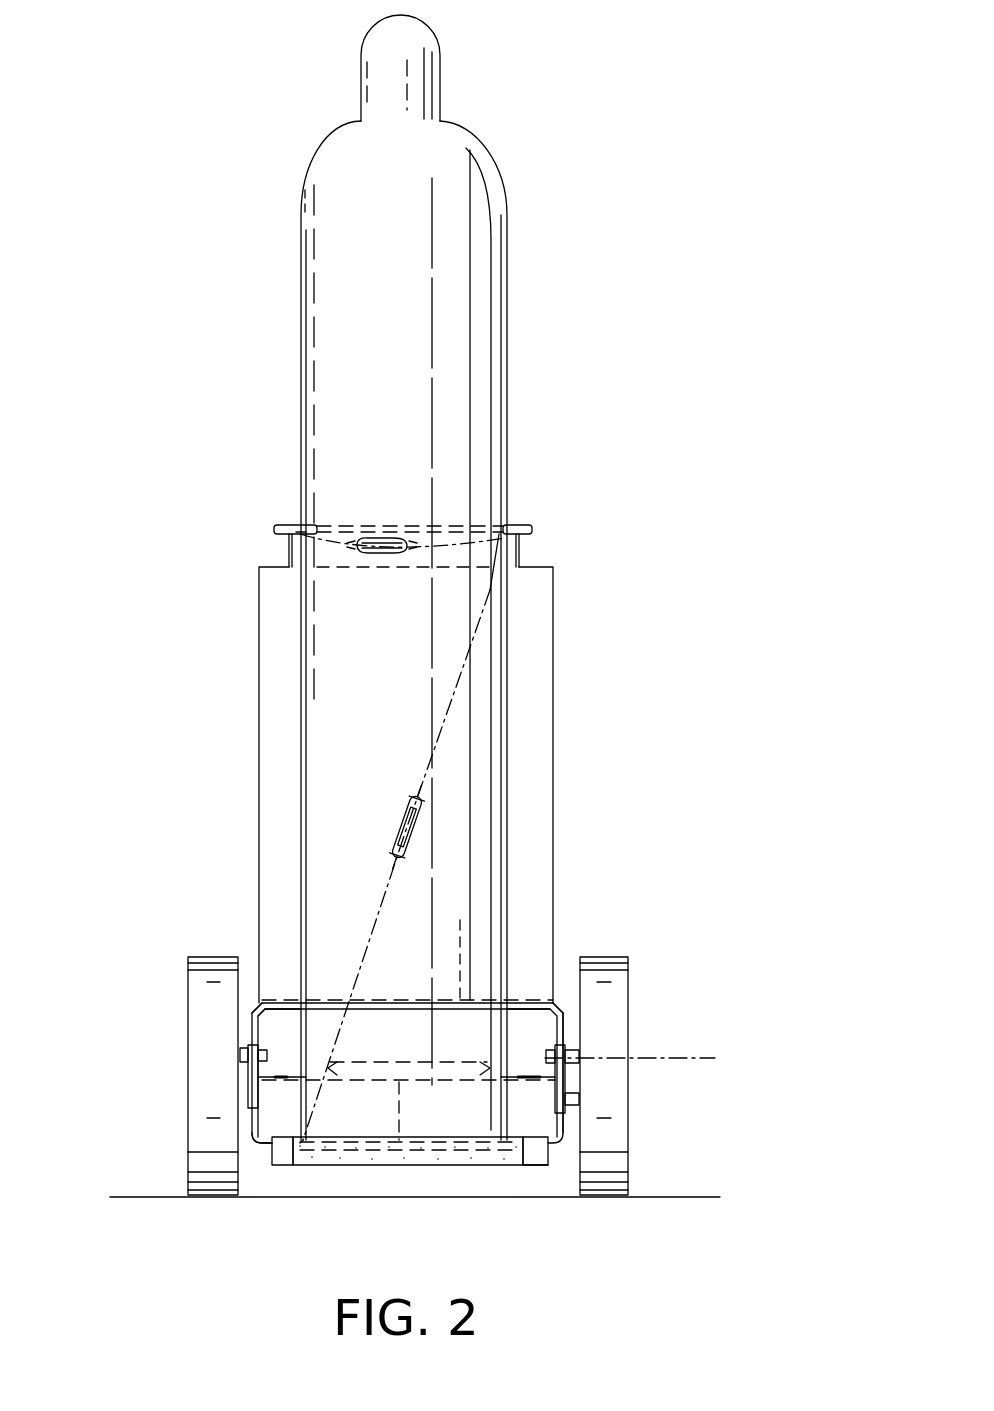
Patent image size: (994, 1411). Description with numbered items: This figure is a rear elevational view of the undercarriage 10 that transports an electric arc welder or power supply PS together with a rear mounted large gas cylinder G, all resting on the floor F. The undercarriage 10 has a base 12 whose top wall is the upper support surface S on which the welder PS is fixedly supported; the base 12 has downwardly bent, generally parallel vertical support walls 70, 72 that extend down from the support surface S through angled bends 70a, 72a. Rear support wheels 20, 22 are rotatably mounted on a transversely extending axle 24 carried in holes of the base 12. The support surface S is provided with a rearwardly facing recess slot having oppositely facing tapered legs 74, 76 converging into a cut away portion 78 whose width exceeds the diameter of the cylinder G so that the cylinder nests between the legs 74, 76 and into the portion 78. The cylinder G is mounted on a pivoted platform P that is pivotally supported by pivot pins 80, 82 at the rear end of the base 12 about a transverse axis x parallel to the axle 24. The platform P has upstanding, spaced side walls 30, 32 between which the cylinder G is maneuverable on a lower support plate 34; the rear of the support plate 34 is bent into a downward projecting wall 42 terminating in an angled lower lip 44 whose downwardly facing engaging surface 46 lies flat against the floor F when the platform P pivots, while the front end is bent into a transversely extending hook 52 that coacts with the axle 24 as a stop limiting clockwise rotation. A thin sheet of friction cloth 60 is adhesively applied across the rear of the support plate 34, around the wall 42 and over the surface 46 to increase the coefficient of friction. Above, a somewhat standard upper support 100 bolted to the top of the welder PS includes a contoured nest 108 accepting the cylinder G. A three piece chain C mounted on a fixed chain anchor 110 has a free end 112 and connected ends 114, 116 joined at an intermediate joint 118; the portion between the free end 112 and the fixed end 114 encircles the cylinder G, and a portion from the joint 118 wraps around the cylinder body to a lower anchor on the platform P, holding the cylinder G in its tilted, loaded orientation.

The gas cylinder G is at (495, 318).
The power supply PS is at (554, 663).
The chain C is at (403, 821).
The upper support surface S is at (265, 1005).
The floor F is at (681, 1196).
The pivoted platform P is at (554, 1171).
The transverse axis x is at (670, 1053).
The undercarriage 10 is at (534, 988).
The base 12 is at (553, 988).
The rear support wheel 20 is at (613, 1022).
The rear support wheel 22 is at (203, 995).
The axle 24 is at (273, 1082).
The side wall 30 is at (560, 1113).
The side wall 32 is at (260, 1115).
The support plate 34 is at (432, 1138).
The downward projecting wall 42 is at (275, 1152).
The lower lip 44 is at (532, 1168).
The lower engaging surface 46 is at (440, 1165).
The hook 52 is at (405, 1165).
The friction cloth 60 is at (340, 1152).
The vertical support wall 70 is at (568, 1025).
The angled bend 70a is at (560, 1005).
The vertical support wall 72 is at (257, 1030).
The angled bend 72a is at (255, 1008).
The tapered leg 74 is at (525, 1003).
The tapered leg 76 is at (293, 1003).
The cut away portion 78 is at (456, 943).
The pivot pin 80 is at (580, 1063).
The pivot pin 82 is at (238, 1055).
The upper support 100 is at (529, 519).
The contoured nest 108 is at (372, 530).
The chain anchor 110 is at (283, 529).
The free end 112 is at (517, 533).
The fixed end 114 is at (301, 532).
The connected end 116 is at (305, 1131).
The intermediate joint 118 is at (498, 526).